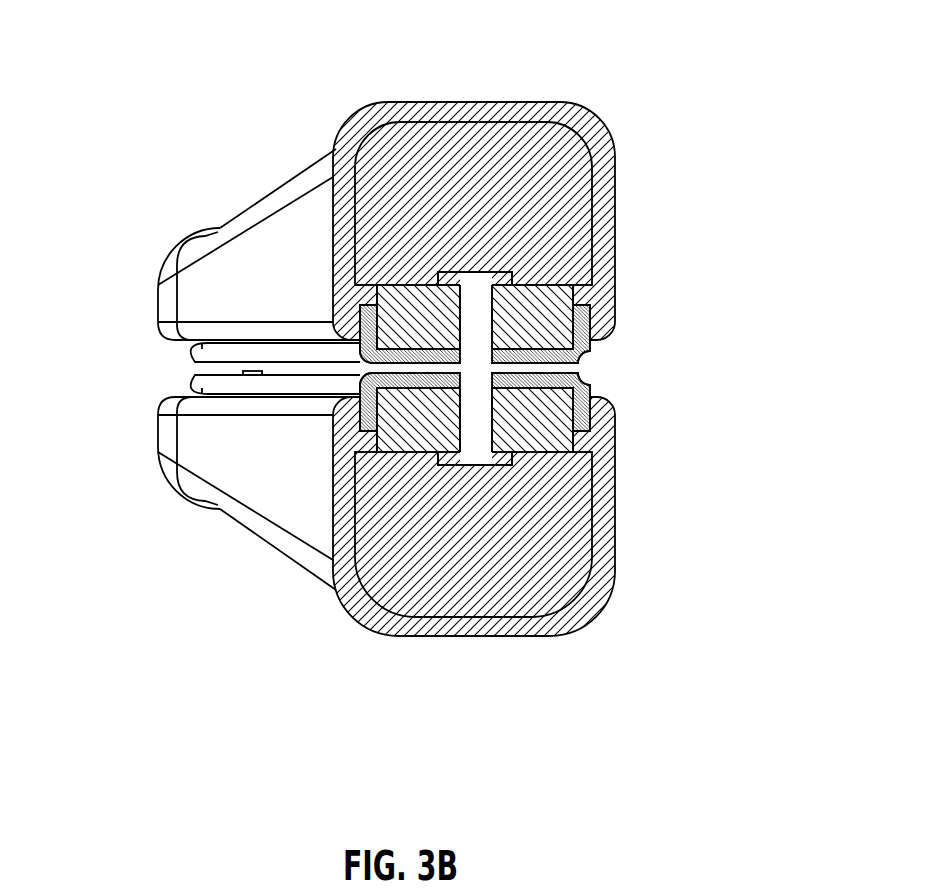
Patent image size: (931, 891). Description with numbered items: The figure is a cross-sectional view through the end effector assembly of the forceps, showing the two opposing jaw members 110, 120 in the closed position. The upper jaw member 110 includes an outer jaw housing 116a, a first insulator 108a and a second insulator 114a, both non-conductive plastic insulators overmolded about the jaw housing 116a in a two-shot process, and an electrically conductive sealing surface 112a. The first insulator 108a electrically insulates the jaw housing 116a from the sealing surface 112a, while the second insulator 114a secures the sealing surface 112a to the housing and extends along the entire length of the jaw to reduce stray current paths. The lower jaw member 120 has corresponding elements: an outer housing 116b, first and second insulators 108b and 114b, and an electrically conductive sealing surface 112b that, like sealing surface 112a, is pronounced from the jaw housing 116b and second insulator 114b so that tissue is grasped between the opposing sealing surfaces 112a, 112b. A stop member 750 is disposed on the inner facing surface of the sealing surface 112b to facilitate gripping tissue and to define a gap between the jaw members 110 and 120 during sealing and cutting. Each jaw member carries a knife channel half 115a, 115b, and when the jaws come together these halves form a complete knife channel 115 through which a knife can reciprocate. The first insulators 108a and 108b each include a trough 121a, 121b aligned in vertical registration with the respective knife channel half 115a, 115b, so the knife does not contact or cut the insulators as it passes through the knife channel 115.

The jaw member 110 is at (511, 232).
The jaw member 120 is at (551, 505).
The knife channel 115 is at (473, 363).
The knife channel half 115a is at (484, 337).
The knife channel half 115b is at (486, 404).
The trough 121a is at (493, 283).
The trough 121b is at (475, 447).
The outer housing 116a is at (390, 165).
The outer housing 116b is at (537, 488).
The second insulator 114a is at (342, 208).
The second insulator 114b is at (335, 522).
The first insulator 108a is at (398, 301).
The first insulator 108b is at (342, 522).
The electrically conductive sealing surface 112a is at (183, 345).
The electrically conductive sealing surface 112b is at (216, 384).
The stop member 750 is at (250, 377).